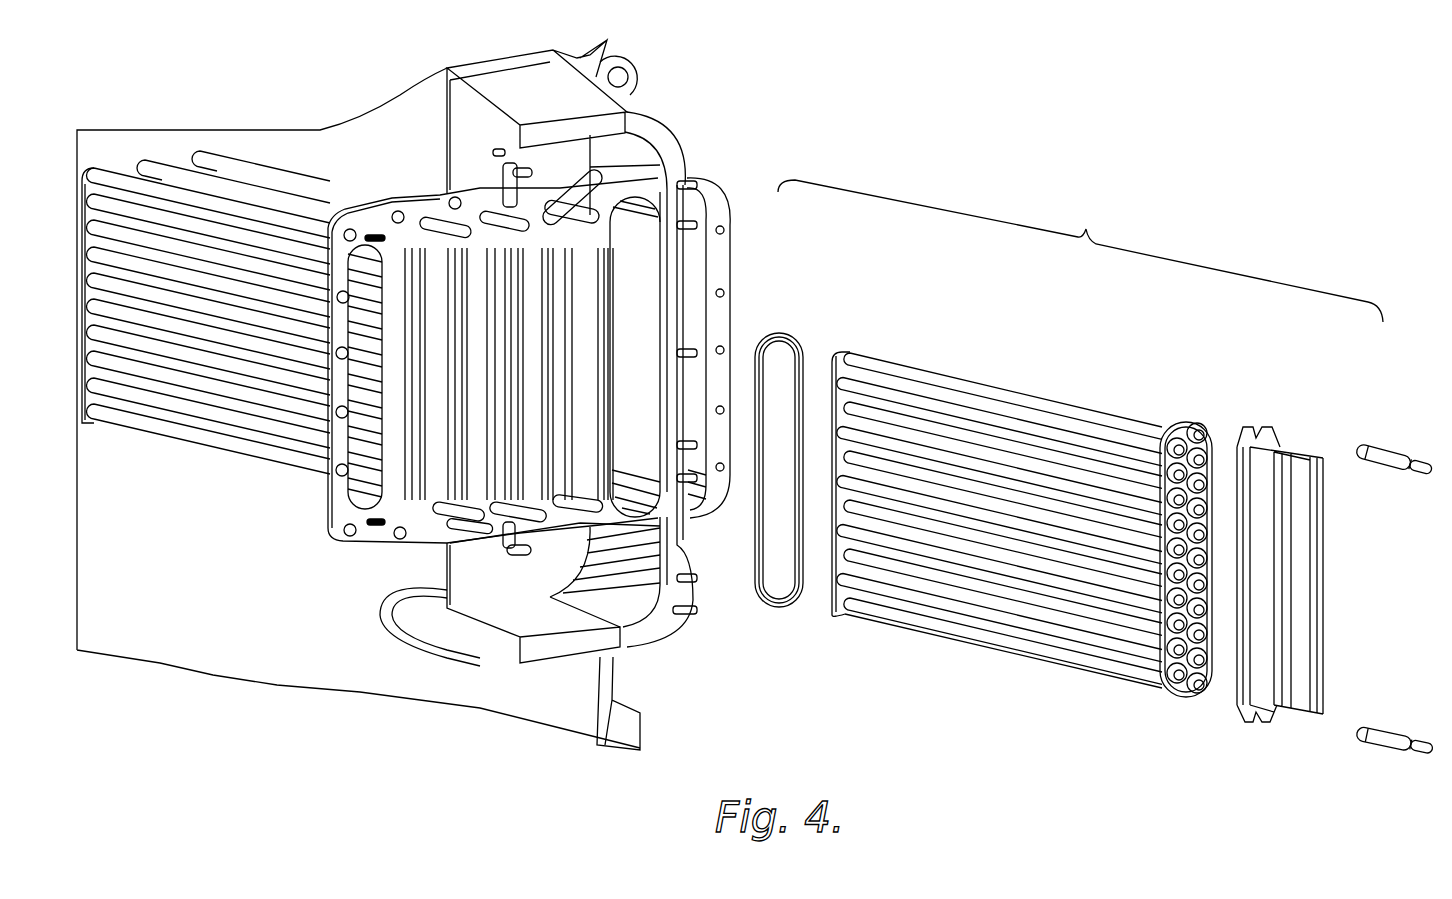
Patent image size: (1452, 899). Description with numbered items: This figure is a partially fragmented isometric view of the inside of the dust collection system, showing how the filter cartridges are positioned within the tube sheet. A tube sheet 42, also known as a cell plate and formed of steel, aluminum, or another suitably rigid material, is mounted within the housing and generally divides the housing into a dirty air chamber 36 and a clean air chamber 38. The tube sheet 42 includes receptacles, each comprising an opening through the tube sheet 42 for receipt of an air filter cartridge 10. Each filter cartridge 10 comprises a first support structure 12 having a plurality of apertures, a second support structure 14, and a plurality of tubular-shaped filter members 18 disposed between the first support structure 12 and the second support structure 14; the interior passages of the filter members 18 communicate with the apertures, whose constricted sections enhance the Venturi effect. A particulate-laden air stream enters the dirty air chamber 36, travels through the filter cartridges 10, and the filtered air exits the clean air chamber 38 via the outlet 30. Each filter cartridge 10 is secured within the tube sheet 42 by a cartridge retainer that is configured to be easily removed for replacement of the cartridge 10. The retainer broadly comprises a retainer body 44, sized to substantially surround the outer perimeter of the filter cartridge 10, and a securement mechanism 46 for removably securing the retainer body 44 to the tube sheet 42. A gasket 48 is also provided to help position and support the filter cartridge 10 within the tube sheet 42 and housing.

The filter cartridge 10 is at (97, 165).
The first support structure 12 is at (1188, 426).
The second support structure 14 is at (843, 355).
The tubular-shaped filter member 18 is at (918, 625).
The outlet 30 is at (700, 250).
The dirty air chamber 36 is at (228, 665).
The clean air chamber 38 is at (510, 580).
The tube sheet 42 is at (388, 532).
The retainer body 44 is at (1323, 577).
The securement mechanism 46 is at (1383, 452).
The gasket 48 is at (779, 333).